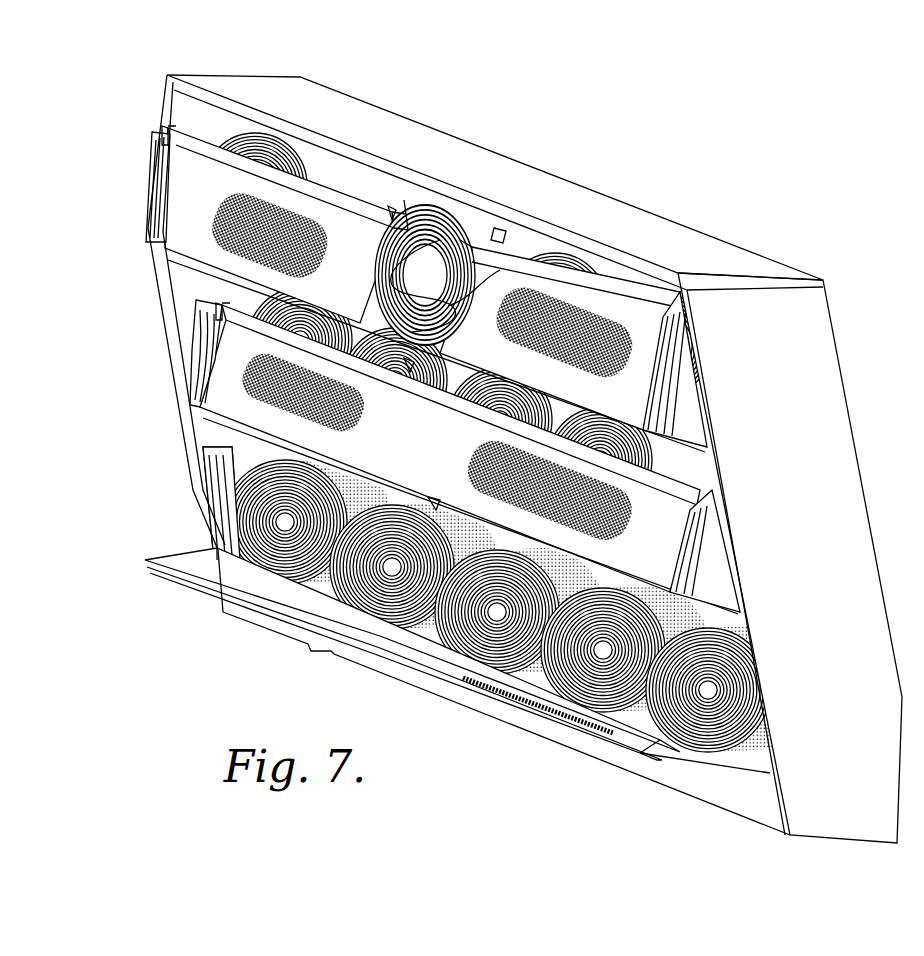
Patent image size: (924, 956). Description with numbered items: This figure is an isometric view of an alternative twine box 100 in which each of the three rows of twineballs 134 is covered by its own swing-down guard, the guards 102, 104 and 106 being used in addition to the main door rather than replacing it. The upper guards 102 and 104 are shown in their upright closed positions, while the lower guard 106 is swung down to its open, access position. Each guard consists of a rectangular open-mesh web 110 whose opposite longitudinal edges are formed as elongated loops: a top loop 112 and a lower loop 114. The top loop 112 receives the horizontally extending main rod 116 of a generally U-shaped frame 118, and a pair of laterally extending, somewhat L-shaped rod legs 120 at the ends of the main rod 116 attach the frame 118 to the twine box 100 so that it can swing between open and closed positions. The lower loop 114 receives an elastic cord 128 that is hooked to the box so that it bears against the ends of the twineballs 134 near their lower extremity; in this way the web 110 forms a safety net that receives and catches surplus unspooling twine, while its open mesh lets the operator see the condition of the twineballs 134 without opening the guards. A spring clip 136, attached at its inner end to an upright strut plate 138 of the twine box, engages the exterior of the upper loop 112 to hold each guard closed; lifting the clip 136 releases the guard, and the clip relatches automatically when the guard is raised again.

The twine box 100 is at (632, 188).
The swing-down guard 102 is at (198, 187).
The swing-down guard 104 is at (214, 371).
The swing-down guard 106 is at (183, 598).
The web 110 is at (190, 228).
The top loop 112 is at (245, 165).
The lower loop 114 is at (340, 307).
The main rod 116 is at (183, 127).
The frame 118 is at (166, 108).
The rod leg 120 is at (166, 151).
The elastic cord 128 is at (684, 441).
The twineball 134 is at (440, 218).
The spring clip 136 is at (390, 211).
The strut plate 138 is at (410, 195).